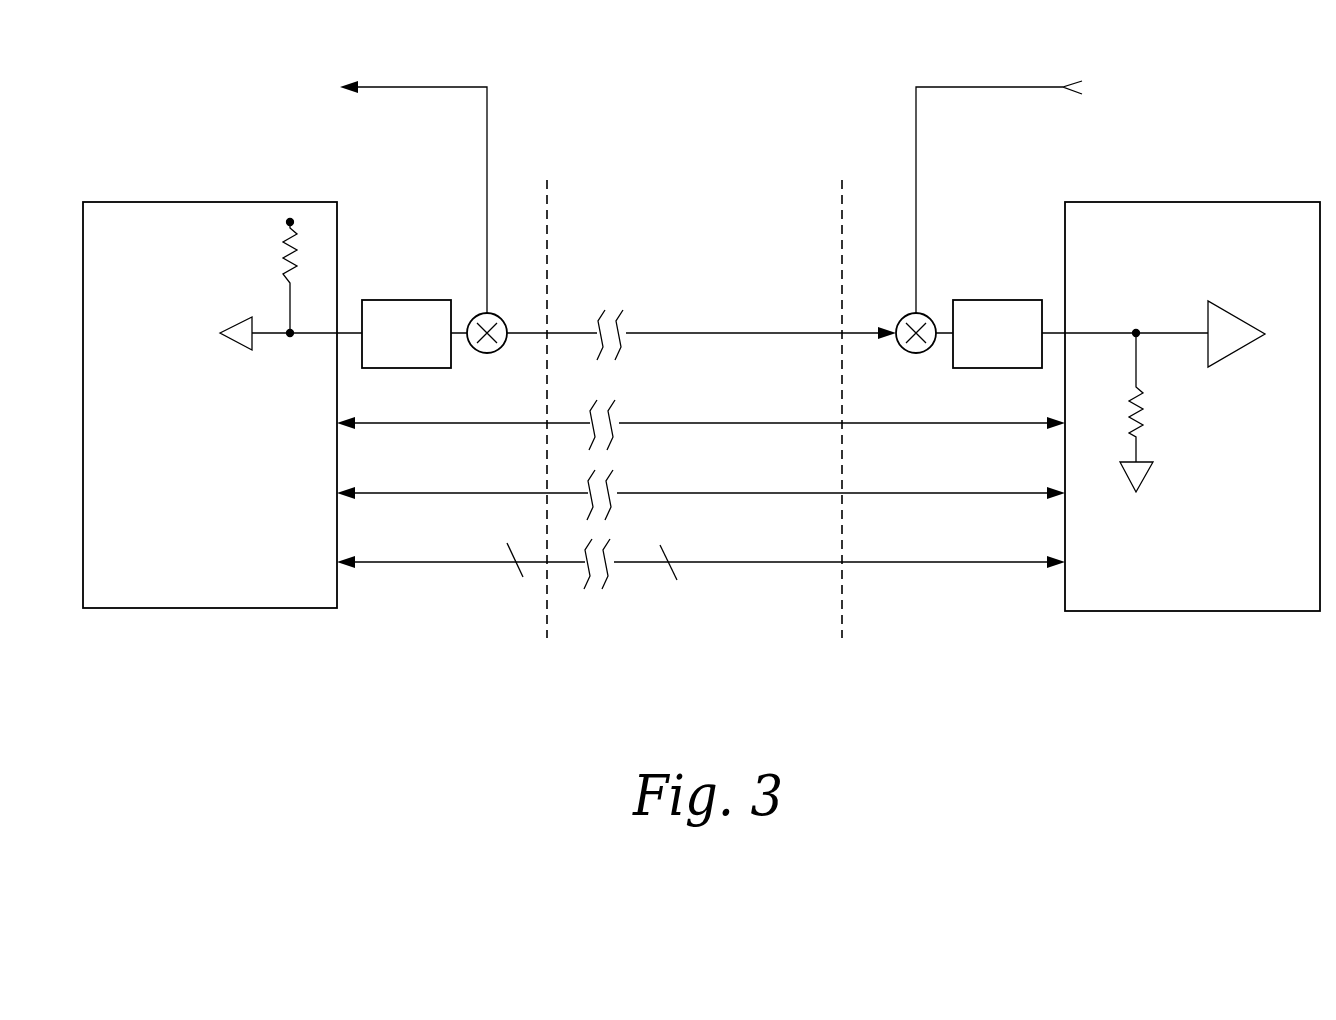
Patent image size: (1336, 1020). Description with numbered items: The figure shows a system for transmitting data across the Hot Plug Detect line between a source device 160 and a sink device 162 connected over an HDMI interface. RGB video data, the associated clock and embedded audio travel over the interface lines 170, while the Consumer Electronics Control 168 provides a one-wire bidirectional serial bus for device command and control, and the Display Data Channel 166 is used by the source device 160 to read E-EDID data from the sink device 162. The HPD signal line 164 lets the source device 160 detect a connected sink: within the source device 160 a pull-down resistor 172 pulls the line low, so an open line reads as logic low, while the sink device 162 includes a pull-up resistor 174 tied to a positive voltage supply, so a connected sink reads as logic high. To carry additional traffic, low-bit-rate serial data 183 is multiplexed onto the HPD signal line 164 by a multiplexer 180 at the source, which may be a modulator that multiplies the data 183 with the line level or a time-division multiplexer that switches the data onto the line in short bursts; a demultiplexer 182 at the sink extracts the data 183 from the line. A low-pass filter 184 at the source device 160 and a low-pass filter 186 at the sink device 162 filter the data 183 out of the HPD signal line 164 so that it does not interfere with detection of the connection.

The source device 160 is at (1168, 612).
The sink device 162 is at (155, 610).
The HPD signal line 164 is at (725, 332).
The Display Data Channel 166 is at (714, 422).
The Consumer Electronics Control 168 is at (714, 492).
The interface lines 170 is at (714, 562).
The pull-down resistor 172 is at (1192, 396).
The pull-up resistor 174 is at (231, 279).
The multiplexer 180 is at (916, 354).
The demultiplexer 182 is at (487, 354).
The data 183 is at (694, 186).
The low-pass filter 184 is at (1027, 370).
The low-pass filter 186 is at (437, 370).